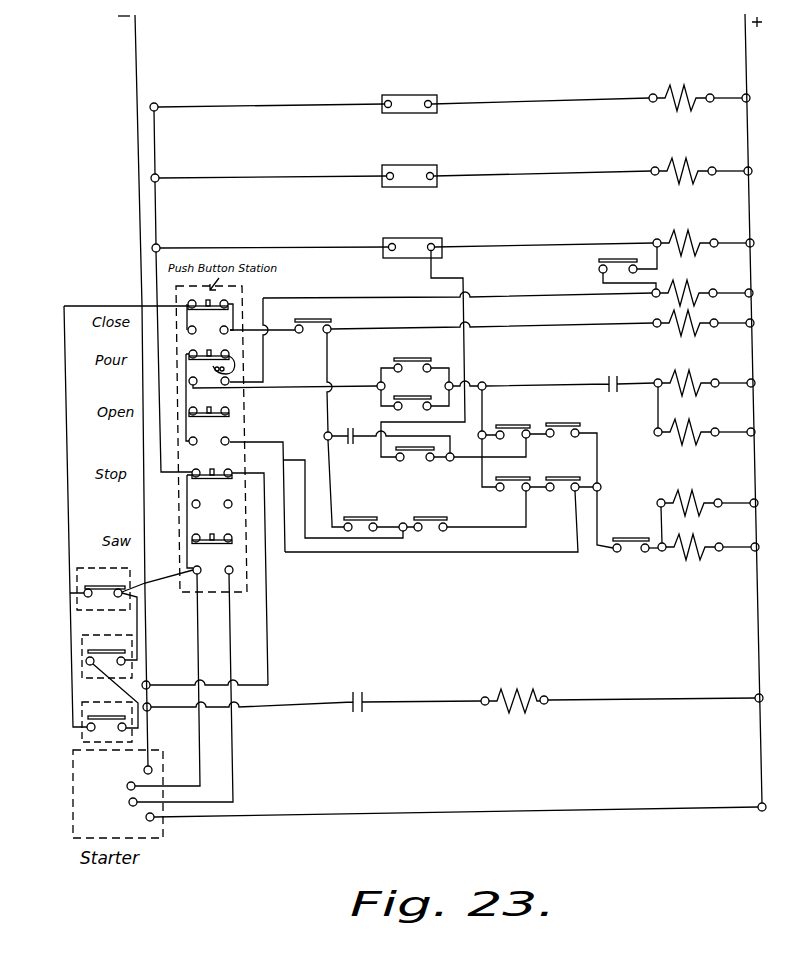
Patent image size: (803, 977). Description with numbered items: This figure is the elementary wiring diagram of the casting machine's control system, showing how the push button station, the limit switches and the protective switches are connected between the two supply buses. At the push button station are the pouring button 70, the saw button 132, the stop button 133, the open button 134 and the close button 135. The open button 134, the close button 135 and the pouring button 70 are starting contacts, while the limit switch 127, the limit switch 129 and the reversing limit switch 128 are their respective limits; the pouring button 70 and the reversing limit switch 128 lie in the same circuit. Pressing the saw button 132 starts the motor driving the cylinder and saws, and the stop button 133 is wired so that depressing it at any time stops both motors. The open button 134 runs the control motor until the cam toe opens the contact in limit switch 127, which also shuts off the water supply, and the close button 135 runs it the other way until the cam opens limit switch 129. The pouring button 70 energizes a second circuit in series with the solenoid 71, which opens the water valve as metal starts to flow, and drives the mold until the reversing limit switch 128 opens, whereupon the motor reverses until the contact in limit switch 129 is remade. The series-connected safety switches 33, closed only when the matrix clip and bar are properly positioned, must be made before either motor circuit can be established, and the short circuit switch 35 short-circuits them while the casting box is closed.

The limit switch 127 is at (362, 279).
The reversing limit switch 128 is at (420, 112).
The limit switch 129 is at (422, 187).
The saw button 132 is at (212, 554).
The stop button 133 is at (209, 518).
The open button 134 is at (209, 426).
The close button 135 is at (210, 317).
The pouring button 70 is at (210, 390).
The solenoid 71 is at (612, 703).
The safety switch 33 is at (82, 711).
The short circuit switch 35 is at (93, 604).